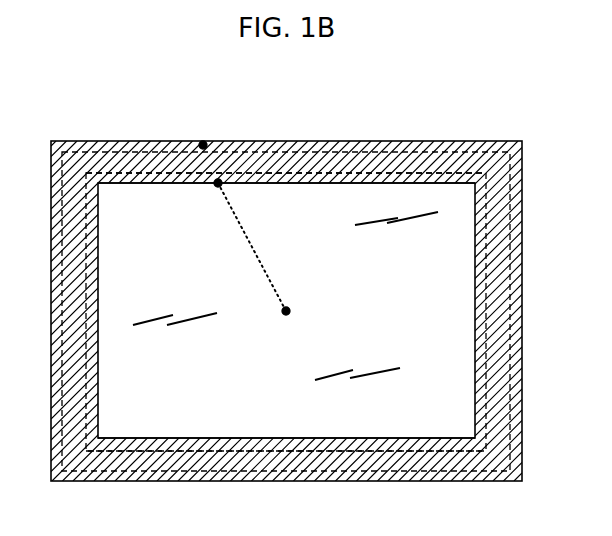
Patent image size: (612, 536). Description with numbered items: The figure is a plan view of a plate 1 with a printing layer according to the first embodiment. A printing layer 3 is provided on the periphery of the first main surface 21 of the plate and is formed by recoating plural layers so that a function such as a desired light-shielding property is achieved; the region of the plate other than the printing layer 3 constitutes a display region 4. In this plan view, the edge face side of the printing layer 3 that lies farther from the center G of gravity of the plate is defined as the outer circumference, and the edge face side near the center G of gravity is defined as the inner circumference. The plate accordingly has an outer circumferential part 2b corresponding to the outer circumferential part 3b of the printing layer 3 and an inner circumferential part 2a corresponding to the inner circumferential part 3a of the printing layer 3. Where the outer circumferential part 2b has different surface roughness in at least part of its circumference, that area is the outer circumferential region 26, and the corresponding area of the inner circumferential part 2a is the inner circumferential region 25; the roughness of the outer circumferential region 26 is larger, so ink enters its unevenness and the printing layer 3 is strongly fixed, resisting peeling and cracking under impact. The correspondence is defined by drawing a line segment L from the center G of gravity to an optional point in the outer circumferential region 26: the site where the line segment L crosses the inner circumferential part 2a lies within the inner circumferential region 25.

The plate with a printing layer 1 is at (449, 110).
The printing layer 3 is at (500, 175).
The inner circumferential part of the printing layer 3a is at (125, 445).
The outer circumferential part of the printing layer 3b is at (243, 142).
The inner circumferential part of the plate 2a is at (214, 438).
The outer circumferential part of the plate 2b is at (315, 146).
The display region 4 is at (339, 320).
The first main surface 21 is at (222, 348).
The inner circumferential region 25 is at (214, 187).
The outer circumferential region 26 is at (203, 142).
The line segment L is at (252, 247).
The center of gravity G is at (281, 313).